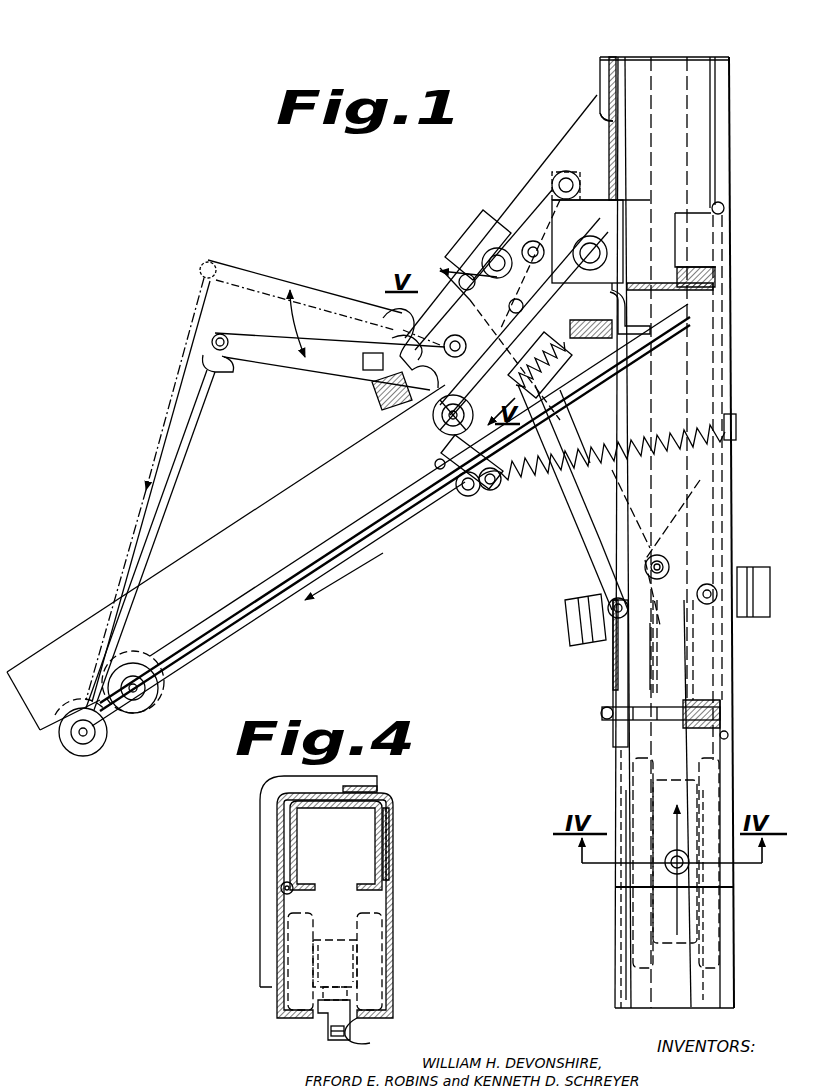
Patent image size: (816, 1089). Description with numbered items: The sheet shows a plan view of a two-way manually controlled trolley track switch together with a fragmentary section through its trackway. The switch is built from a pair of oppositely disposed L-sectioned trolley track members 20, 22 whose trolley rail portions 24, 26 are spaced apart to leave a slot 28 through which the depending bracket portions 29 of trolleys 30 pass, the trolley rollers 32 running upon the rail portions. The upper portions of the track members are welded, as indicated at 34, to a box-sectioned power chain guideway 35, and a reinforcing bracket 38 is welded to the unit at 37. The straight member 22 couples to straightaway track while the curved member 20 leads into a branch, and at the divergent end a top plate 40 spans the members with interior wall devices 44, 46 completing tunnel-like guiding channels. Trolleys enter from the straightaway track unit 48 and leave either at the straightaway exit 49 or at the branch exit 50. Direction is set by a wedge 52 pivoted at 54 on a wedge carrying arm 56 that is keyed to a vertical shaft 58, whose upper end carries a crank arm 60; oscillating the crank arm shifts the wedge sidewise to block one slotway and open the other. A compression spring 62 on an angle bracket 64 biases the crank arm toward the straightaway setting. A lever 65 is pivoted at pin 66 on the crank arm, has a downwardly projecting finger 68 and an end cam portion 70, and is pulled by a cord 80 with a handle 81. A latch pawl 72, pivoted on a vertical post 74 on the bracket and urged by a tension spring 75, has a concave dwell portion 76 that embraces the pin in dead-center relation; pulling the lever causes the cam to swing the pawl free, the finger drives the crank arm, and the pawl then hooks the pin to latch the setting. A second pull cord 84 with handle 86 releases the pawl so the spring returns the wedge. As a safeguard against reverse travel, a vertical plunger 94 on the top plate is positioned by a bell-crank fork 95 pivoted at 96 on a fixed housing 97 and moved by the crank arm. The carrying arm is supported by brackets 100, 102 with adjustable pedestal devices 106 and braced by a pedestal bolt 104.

In FIG. 1, the trolley track member 20 is at (615, 794).
In FIG. 4, the trolley track member 20 is at (277, 1003).
In FIG. 1, the trolley track member 22 is at (733, 783).
In FIG. 4, the trolley track member 22 is at (393, 981).
In FIG. 1, the trolley rail portion 24 is at (643, 1008).
In FIG. 4, the trolley rail portion 24 is at (297, 1021).
In FIG. 1, the trolley rail portion 26 is at (713, 1005).
In FIG. 4, the trolley rail portion 26 is at (370, 1043).
In FIG. 1, the slot 28 is at (668, 1008).
In FIG. 4, the slot 28 is at (350, 1036).
In FIG. 1, the bracket portion 29 is at (670, 872).
In FIG. 4, the bracket portion 29 is at (327, 1022).
In FIG. 1, the trolley 30 is at (655, 911).
In FIG. 4, the trolley 30 is at (365, 906).
In FIG. 1, the trolley roller 32 is at (676, 863).
In FIG. 4, the trolley roller 32 is at (297, 928).
In FIG. 4, the weld 34 is at (281, 889).
In FIG. 4, the power chain guideway 35 is at (290, 849).
In FIG. 4, the weld 37 is at (378, 785).
In FIG. 1, the reinforcing bracket 38 is at (602, 716).
In FIG. 4, the reinforcing bracket 38 is at (260, 798).
In FIG. 1, the top plate 40 is at (563, 155).
In FIG. 1, the wall device 44 is at (530, 193).
In FIG. 1, the wall device 46 is at (612, 118).
In FIG. 1, the straightaway track unit 48 is at (617, 946).
In FIG. 1, the straightaway exit 49 is at (665, 57).
In FIG. 1, the branch exit 50 is at (473, 216).
In FIG. 1, the wedge 52 is at (655, 637).
In FIG. 1, the pivotal connection 54 is at (590, 512).
In FIG. 1, the wedge carrying arm 56 is at (600, 536).
In FIG. 1, the vertical shaft 58 is at (545, 305).
In FIG. 1, the crank arm 60 is at (383, 385).
In FIG. 1, the compression spring 62 is at (576, 443).
In FIG. 1, the angle bracket 64 is at (332, 535).
In FIG. 1, the lever 65 is at (271, 277).
In FIG. 1, the pivot pin 66 is at (403, 330).
In FIG. 1, the finger 68 is at (317, 327).
In FIG. 1, the cam portion 70 is at (445, 356).
In FIG. 1, the latch pawl 72 is at (436, 466).
In FIG. 1, the vertical post 74 is at (450, 441).
In FIG. 1, the tension spring 75 is at (503, 481).
In FIG. 1, the dwell portion 76 is at (392, 338).
In FIG. 1, the pull cord 80 is at (165, 419).
In FIG. 1, the manual handle 81 is at (108, 740).
In FIG. 1, the second pull cord 84 is at (268, 615).
In FIG. 1, the manual handle 86 is at (160, 692).
In FIG. 1, the vertical plunger 94 is at (485, 262).
In FIG. 1, the fork 95 is at (466, 271).
In FIG. 1, the pivot 96 is at (488, 209).
In FIG. 1, the fixed housing 97 is at (438, 268).
In FIG. 1, the bracket 100 is at (758, 567).
In FIG. 1, the bracket 102 is at (568, 624).
In FIG. 1, the pedestal bolt 104 is at (553, 178).
In FIG. 1, the pedestal device 106 is at (610, 604).